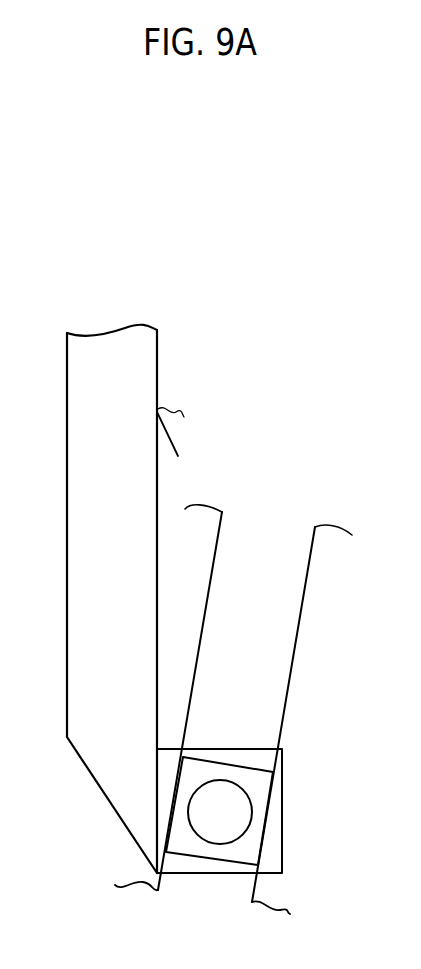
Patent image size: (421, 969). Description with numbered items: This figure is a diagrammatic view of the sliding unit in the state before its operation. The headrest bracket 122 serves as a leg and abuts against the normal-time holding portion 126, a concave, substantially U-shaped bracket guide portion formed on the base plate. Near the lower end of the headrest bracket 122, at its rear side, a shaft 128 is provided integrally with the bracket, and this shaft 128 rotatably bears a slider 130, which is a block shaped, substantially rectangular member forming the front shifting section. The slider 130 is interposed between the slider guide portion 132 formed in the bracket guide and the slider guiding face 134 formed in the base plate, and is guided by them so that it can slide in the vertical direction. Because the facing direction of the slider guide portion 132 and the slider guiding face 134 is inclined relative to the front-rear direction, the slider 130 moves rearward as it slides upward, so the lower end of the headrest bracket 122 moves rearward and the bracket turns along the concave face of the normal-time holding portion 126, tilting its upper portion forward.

The headrest bracket 122 is at (157, 353).
The normal-time holding portion 126 is at (178, 456).
The shaft 128 is at (235, 811).
The slider 130 is at (232, 765).
The slider guide portion 132 is at (210, 598).
The slider guiding face 134 is at (299, 592).